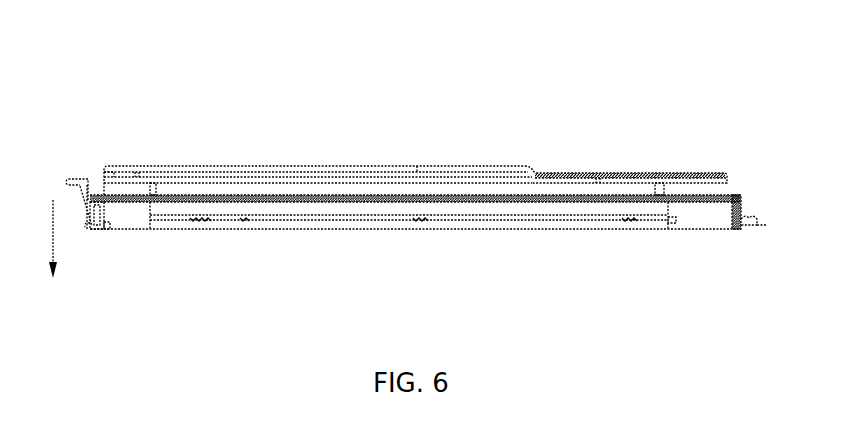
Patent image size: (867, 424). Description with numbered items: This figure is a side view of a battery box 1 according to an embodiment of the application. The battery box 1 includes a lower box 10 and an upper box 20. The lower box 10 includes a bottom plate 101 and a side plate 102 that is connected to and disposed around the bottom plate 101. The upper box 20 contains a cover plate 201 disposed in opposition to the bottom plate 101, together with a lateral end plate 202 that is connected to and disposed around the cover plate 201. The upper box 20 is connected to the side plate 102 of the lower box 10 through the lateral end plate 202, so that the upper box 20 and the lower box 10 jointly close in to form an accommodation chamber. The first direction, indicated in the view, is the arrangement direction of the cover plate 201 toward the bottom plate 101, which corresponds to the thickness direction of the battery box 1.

The battery box 1 is at (381, 24).
The upper box 20 is at (208, 158).
The cover plate 201 is at (511, 166).
The lateral end plate 202 is at (727, 196).
The lower box 10 is at (296, 243).
The bottom plate 101 is at (358, 229).
The side plate 102 is at (723, 228).